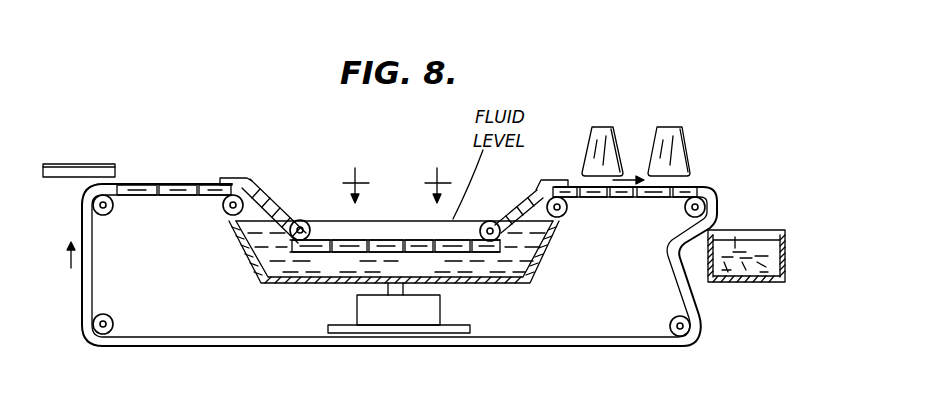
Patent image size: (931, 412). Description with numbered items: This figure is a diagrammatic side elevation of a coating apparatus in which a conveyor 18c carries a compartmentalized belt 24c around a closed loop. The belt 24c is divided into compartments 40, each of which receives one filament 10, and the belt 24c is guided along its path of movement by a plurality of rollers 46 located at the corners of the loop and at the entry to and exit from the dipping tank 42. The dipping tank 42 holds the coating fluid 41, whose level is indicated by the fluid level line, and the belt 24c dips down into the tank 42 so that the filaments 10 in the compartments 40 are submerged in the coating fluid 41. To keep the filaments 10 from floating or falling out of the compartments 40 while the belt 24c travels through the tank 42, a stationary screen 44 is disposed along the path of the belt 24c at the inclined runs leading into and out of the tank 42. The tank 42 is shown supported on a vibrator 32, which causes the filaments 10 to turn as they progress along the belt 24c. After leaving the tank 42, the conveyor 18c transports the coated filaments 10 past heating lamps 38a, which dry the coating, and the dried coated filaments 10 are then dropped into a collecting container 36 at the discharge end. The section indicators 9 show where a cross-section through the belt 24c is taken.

The section line 9 is at (397, 173).
The filaments 10 is at (177, 194).
The conveyor 18c is at (177, 183).
The compartmentalized belt 24c is at (182, 196).
The vibrator 32 is at (366, 308).
The collecting container 36 is at (750, 283).
The heating lamps 38a is at (655, 134).
The compartment 40 is at (399, 252).
The coating fluid 41 is at (508, 268).
The dipping tank 42 is at (545, 252).
The stationary screen 44 is at (249, 180).
The rollers 46 is at (108, 216).